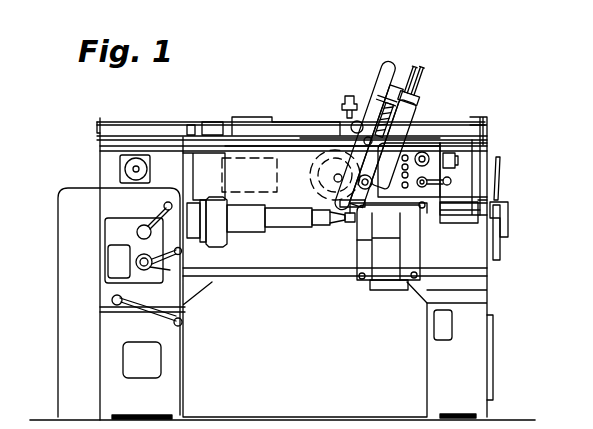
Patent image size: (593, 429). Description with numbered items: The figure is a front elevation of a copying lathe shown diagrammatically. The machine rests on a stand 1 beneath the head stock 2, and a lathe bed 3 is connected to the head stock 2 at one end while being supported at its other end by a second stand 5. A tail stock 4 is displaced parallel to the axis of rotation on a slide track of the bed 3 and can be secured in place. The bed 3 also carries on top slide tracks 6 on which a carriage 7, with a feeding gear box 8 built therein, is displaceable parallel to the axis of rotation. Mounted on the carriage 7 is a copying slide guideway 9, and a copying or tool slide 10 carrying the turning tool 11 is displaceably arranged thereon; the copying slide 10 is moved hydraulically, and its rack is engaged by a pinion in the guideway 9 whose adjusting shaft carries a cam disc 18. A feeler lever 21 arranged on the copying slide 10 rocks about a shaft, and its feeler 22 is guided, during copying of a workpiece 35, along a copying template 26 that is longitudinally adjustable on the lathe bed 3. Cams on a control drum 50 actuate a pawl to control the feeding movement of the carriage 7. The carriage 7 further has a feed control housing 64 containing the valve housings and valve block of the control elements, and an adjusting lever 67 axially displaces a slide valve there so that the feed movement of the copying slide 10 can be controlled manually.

The stand 1 is at (110, 170).
The head stock 2 is at (108, 207).
The lathe bed 3 is at (295, 250).
The tail stock 4 is at (346, 222).
The stand 5 is at (482, 155).
The slide tracks 6 is at (488, 245).
The carriage 7 is at (287, 163).
The feeding gear box 8 is at (236, 168).
The copying slide guideway 9 is at (407, 108).
The copying slide 10 is at (337, 170).
The turning tool 11 is at (330, 202).
The cam disc 18 is at (480, 139).
The feeler lever 21 is at (349, 94).
The feeler 22 is at (350, 124).
The copying template 26 is at (253, 120).
The workpiece 35 is at (262, 224).
The control drum 50 is at (325, 175).
The feed control housing 64 is at (425, 158).
The adjusting lever 67 is at (452, 181).